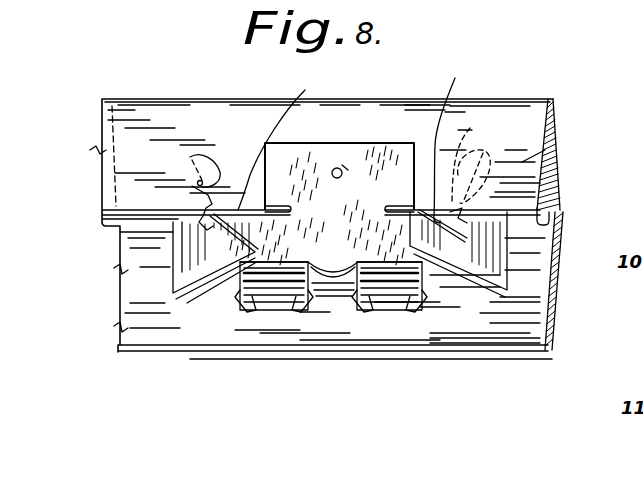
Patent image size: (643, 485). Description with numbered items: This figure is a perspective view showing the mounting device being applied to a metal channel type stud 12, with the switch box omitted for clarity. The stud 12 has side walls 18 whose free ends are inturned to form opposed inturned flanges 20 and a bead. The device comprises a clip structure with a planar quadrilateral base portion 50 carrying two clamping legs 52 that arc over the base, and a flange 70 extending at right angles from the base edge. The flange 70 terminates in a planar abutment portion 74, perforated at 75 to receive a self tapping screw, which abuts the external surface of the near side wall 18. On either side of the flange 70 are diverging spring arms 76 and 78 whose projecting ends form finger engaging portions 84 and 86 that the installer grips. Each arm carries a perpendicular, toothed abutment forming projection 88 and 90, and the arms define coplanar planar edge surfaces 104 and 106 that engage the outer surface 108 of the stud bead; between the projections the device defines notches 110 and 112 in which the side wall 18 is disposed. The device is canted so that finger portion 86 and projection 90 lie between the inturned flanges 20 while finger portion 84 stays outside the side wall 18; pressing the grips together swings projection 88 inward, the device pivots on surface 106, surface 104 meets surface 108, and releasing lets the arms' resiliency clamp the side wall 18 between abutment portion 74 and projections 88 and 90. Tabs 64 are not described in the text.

The metal channel type stud 12 is at (208, 80).
The side wall 18 is at (549, 179).
The inturned flange 20 is at (562, 213).
The base portion 50 is at (330, 275).
The clamping leg 52 is at (280, 310).
The tab 64 is at (240, 305).
The flange 70 is at (290, 245).
The abutment portion 74 is at (343, 166).
The perforation 75 is at (335, 167).
The spring arm 76 is at (523, 159).
The spring arm 78 is at (205, 298).
The finger engaging portion 84 is at (492, 267).
The finger engaging portion 86 is at (182, 263).
The abutment forming projection 88 is at (476, 167).
The abutment forming projection 90 is at (216, 176).
The planar edge surface 104 is at (464, 139).
The planar edge surface 106 is at (209, 238).
The outer surface of stud bead 108 is at (556, 229).
The notch 110 is at (289, 140).
The notch 112 is at (419, 189).